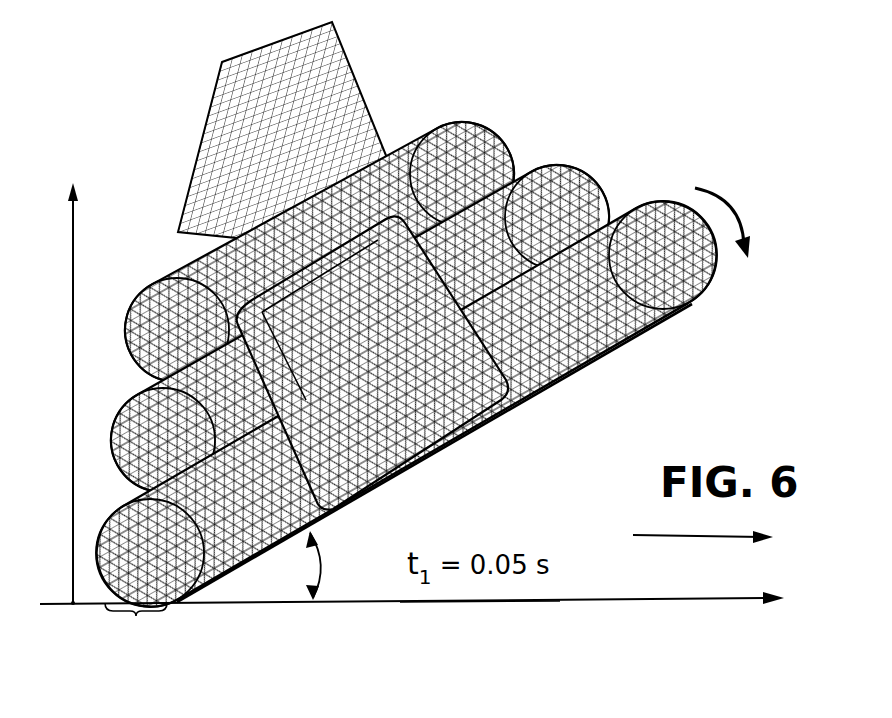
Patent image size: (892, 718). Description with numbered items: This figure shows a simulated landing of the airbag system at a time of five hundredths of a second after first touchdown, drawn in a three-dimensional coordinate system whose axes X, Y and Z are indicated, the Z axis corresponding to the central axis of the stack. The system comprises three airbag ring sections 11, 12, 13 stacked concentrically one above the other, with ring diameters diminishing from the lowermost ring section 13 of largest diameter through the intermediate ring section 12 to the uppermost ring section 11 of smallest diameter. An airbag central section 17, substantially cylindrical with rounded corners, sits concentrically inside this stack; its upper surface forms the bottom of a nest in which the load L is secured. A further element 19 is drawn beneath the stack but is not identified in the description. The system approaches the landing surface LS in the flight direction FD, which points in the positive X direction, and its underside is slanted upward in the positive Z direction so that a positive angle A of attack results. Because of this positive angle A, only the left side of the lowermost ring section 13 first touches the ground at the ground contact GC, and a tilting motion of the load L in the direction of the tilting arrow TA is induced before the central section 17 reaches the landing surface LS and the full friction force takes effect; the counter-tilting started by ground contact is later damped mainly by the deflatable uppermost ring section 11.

The uppermost ring section 11 is at (485, 137).
The intermediate ring section 12 is at (592, 163).
The lowermost ring section 13 is at (712, 218).
The airbag central section 17 is at (457, 442).
The base plate 19 is at (553, 388).
The load L is at (338, 93).
The tilting arrow TA is at (728, 202).
The Z-axis Z is at (76, 222).
The X-direction X is at (740, 600).
The Y axis Y is at (82, 592).
The landing surface LS is at (590, 599).
The ground contact GC is at (136, 629).
The angle of attack A is at (287, 568).
The flight direction FD is at (672, 536).